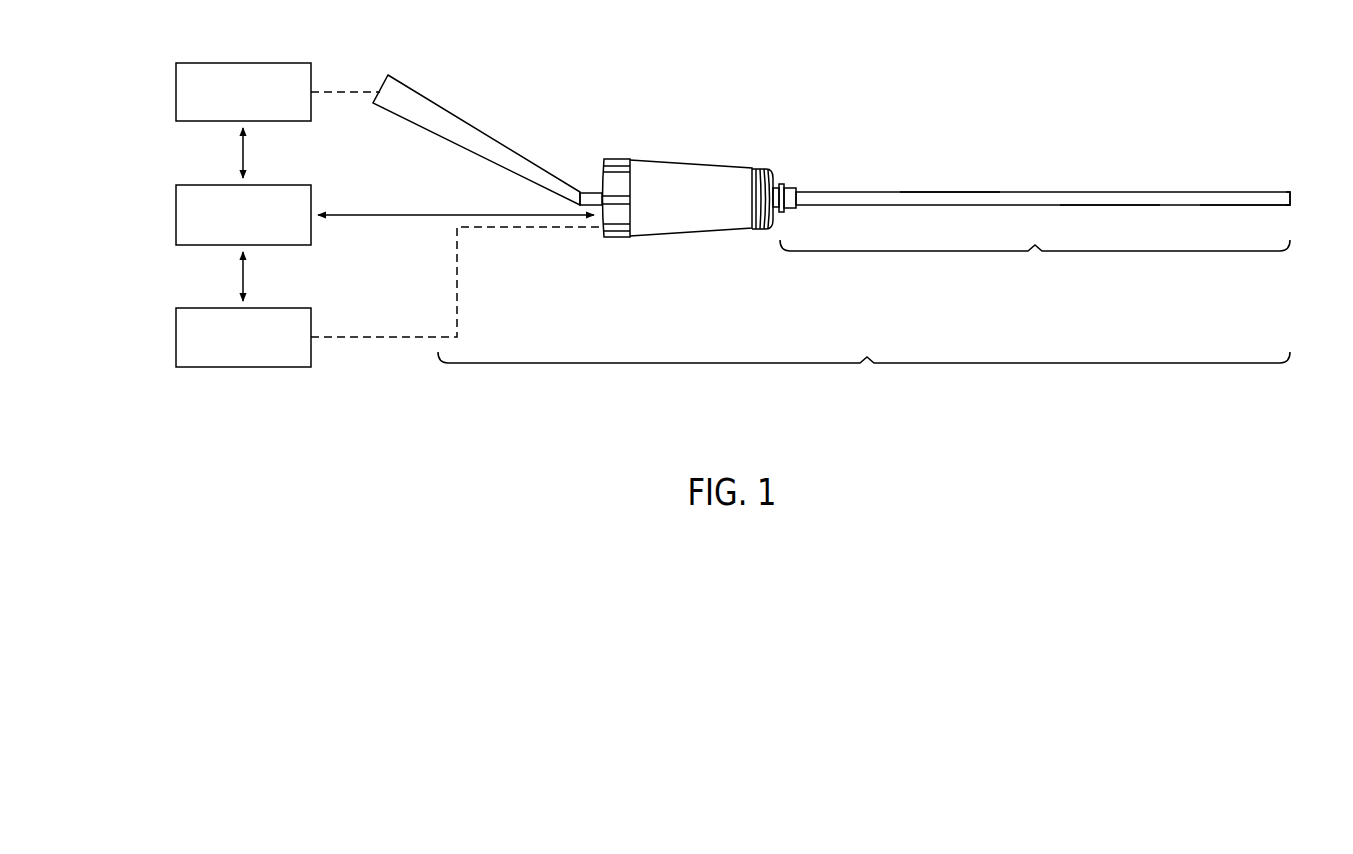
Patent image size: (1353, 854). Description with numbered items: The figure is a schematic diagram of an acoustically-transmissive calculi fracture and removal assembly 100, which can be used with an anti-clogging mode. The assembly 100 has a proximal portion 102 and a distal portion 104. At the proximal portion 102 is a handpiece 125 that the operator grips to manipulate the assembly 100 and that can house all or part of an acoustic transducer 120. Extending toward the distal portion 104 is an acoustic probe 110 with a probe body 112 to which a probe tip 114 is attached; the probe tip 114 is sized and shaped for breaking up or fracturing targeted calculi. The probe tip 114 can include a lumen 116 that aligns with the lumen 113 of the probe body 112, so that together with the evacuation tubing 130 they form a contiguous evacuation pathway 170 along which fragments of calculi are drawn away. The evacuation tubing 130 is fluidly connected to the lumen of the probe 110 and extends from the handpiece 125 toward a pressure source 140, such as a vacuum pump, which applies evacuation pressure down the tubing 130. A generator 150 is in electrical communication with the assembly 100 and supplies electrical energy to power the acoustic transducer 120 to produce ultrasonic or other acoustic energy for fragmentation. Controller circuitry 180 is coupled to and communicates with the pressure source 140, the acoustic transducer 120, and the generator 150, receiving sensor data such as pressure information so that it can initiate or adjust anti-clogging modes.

The acoustically-transmissive calculi fracture and removal assembly 100 is at (1237, 73).
The proximal portion 102 is at (658, 143).
The distal portion 104 is at (1233, 176).
The acoustic probe 110 is at (1056, 223).
The probe body 112 is at (1110, 205).
The lumen of the probe body 113 is at (906, 192).
The probe tip 114 is at (1232, 205).
The lumen of the probe tip 116 is at (1268, 192).
The acoustic transducer 120 is at (710, 178).
The handpiece 125 is at (675, 218).
The evacuation tubing 130 is at (487, 135).
The pressure source 140 is at (272, 308).
The generator 150 is at (243, 63).
The evacuation pathway 170 is at (864, 375).
The controller circuitry 180 is at (272, 185).